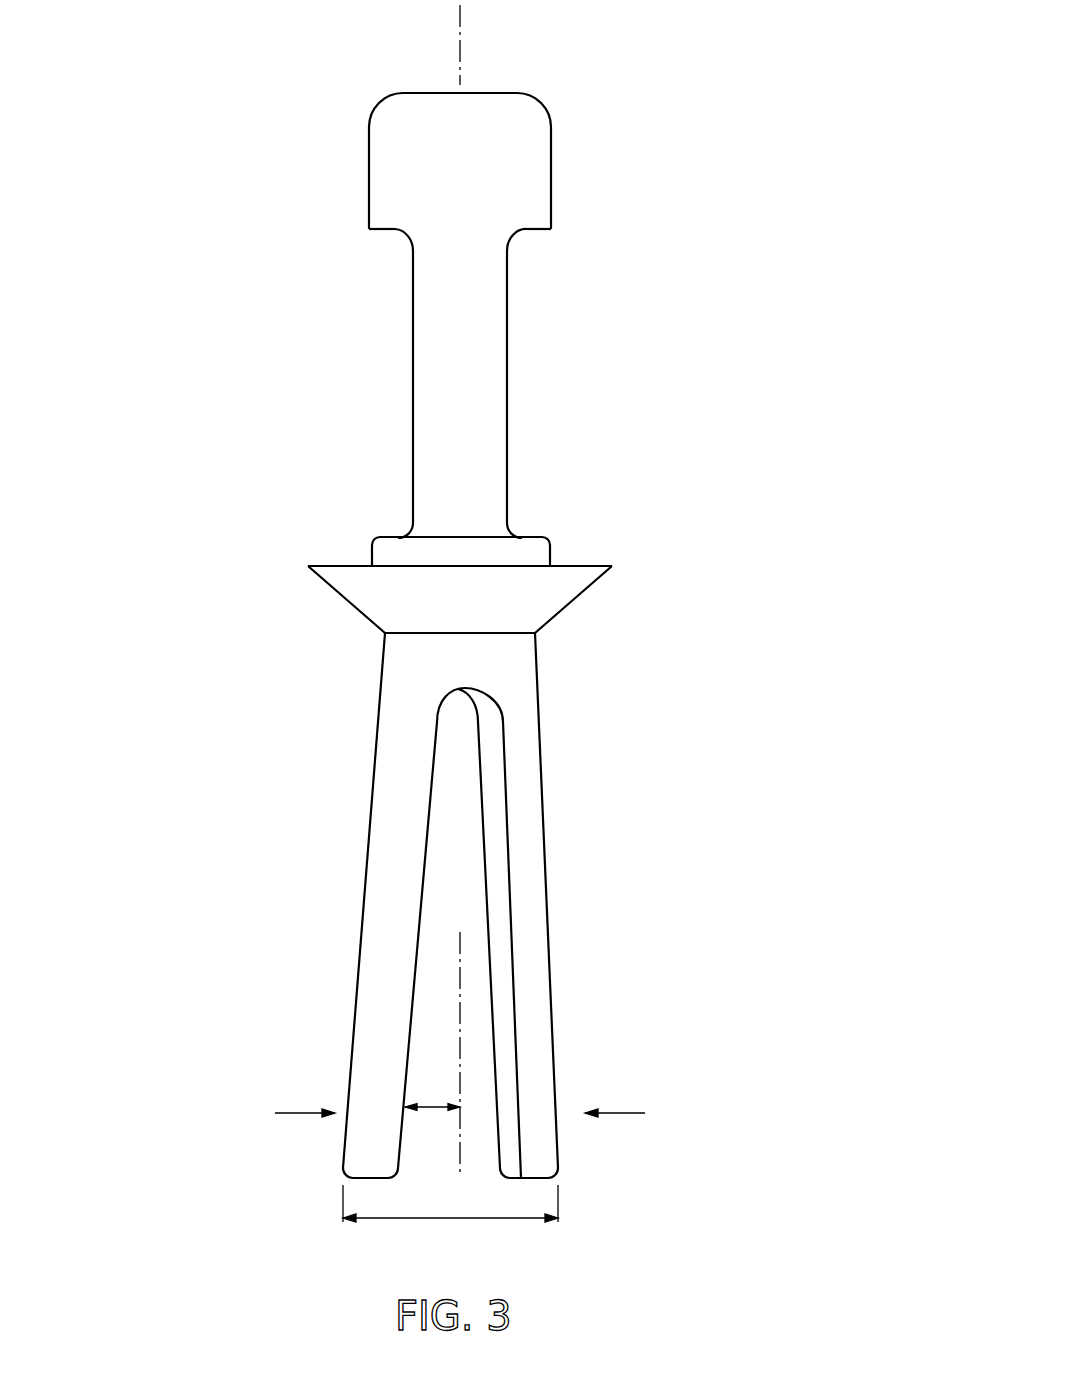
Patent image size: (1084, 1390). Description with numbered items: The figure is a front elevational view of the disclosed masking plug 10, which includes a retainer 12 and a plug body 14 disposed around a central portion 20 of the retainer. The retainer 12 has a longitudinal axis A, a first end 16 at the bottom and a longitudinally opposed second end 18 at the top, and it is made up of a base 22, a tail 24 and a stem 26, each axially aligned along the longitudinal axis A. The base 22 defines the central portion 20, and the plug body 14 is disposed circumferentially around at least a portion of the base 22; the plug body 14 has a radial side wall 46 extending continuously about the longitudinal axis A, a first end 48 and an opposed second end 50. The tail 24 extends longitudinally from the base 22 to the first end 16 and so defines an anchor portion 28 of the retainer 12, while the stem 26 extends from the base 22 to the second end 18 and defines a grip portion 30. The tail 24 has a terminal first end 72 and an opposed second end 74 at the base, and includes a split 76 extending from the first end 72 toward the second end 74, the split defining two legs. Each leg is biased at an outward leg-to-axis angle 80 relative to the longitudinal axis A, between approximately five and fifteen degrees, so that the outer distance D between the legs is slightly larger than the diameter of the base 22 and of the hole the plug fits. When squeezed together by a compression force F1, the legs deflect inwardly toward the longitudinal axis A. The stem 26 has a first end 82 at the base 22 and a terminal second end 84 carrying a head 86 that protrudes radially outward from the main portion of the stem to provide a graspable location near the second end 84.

The masking plug 10 is at (683, 197).
The retainer 12 is at (532, 538).
The plug body 14 is at (585, 566).
The first end 16 is at (513, 1230).
The second end 18 is at (454, 137).
The central portion 20 is at (499, 589).
The base 22 is at (372, 541).
The tail 24 is at (540, 733).
The stem 26 is at (519, 376).
The anchor portion 28 is at (563, 905).
The grip portion 30 is at (535, 392).
The radial side wall 46 is at (580, 600).
The first end 48 is at (347, 620).
The second end 50 is at (384, 521).
The first end 72 is at (310, 1092).
The second end 74 is at (350, 662).
The split 76 is at (473, 911).
The leg-to-axis angle 80 is at (438, 1112).
The first end 82 is at (400, 503).
The second end 84 is at (358, 128).
The head 86 is at (551, 177).
The longitudinal axis A is at (462, 28).
The outer distance D is at (447, 1222).
The compression force F1 is at (636, 1085).